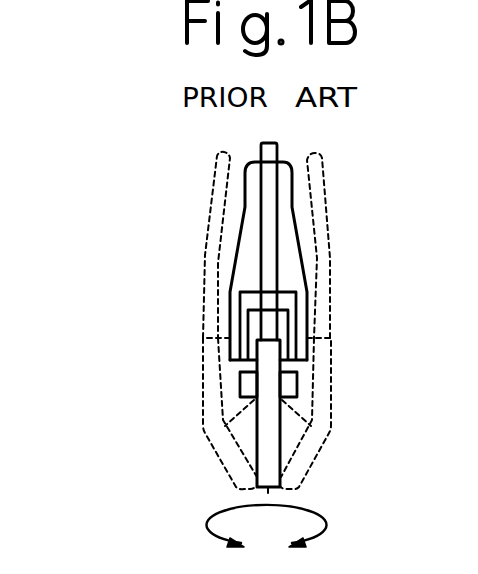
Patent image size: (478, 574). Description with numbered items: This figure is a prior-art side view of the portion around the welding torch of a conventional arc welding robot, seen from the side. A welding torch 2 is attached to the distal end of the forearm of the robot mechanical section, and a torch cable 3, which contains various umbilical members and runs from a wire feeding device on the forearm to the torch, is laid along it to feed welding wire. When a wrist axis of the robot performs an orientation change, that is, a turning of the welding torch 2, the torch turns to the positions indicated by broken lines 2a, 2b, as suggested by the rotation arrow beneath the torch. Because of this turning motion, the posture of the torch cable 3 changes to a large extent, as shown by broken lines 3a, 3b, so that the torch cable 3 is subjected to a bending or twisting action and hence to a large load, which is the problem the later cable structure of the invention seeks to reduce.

The welding torch 2 is at (268, 464).
The broken line showing turned welding torch 2a is at (203, 427).
The broken line showing turned welding torch 2b is at (331, 418).
The torch cable 3 is at (266, 206).
The broken line showing changed posture of torch cable 3a is at (204, 248).
The broken line showing changed posture of torch cable 3b is at (325, 267).